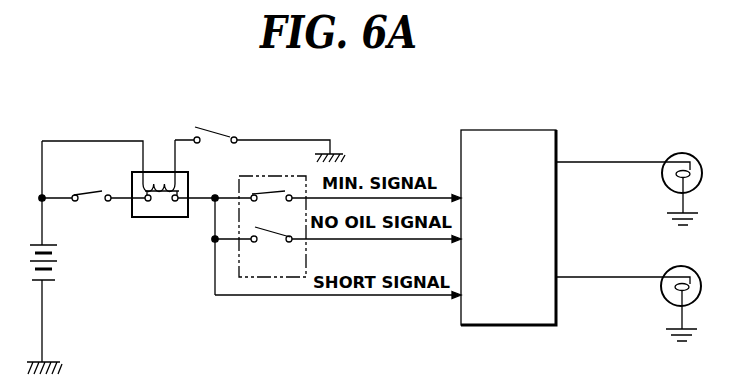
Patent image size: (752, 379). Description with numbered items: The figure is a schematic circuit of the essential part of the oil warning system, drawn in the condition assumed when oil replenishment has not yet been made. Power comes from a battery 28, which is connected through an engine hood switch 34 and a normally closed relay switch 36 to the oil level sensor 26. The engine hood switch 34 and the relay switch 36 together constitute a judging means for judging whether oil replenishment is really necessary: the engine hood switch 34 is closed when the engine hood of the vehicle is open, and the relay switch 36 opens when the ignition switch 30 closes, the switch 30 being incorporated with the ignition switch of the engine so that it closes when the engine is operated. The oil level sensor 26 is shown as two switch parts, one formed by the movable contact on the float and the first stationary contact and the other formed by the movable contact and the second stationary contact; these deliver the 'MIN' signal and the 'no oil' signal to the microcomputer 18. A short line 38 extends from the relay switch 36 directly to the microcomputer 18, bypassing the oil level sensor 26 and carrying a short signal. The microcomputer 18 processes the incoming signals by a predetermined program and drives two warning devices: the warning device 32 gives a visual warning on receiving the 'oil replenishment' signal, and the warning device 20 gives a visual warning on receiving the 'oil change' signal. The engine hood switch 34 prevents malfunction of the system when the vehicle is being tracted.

The microcomputer 18 is at (490, 130).
The warning device 20 is at (666, 271).
The oil level sensor 26 is at (283, 176).
The battery 28 is at (57, 265).
The switch 30 is at (218, 128).
The warning device 32 is at (667, 158).
The engine hood switch 34 is at (86, 192).
The relay switch 36 is at (146, 217).
The short line 38 is at (348, 297).